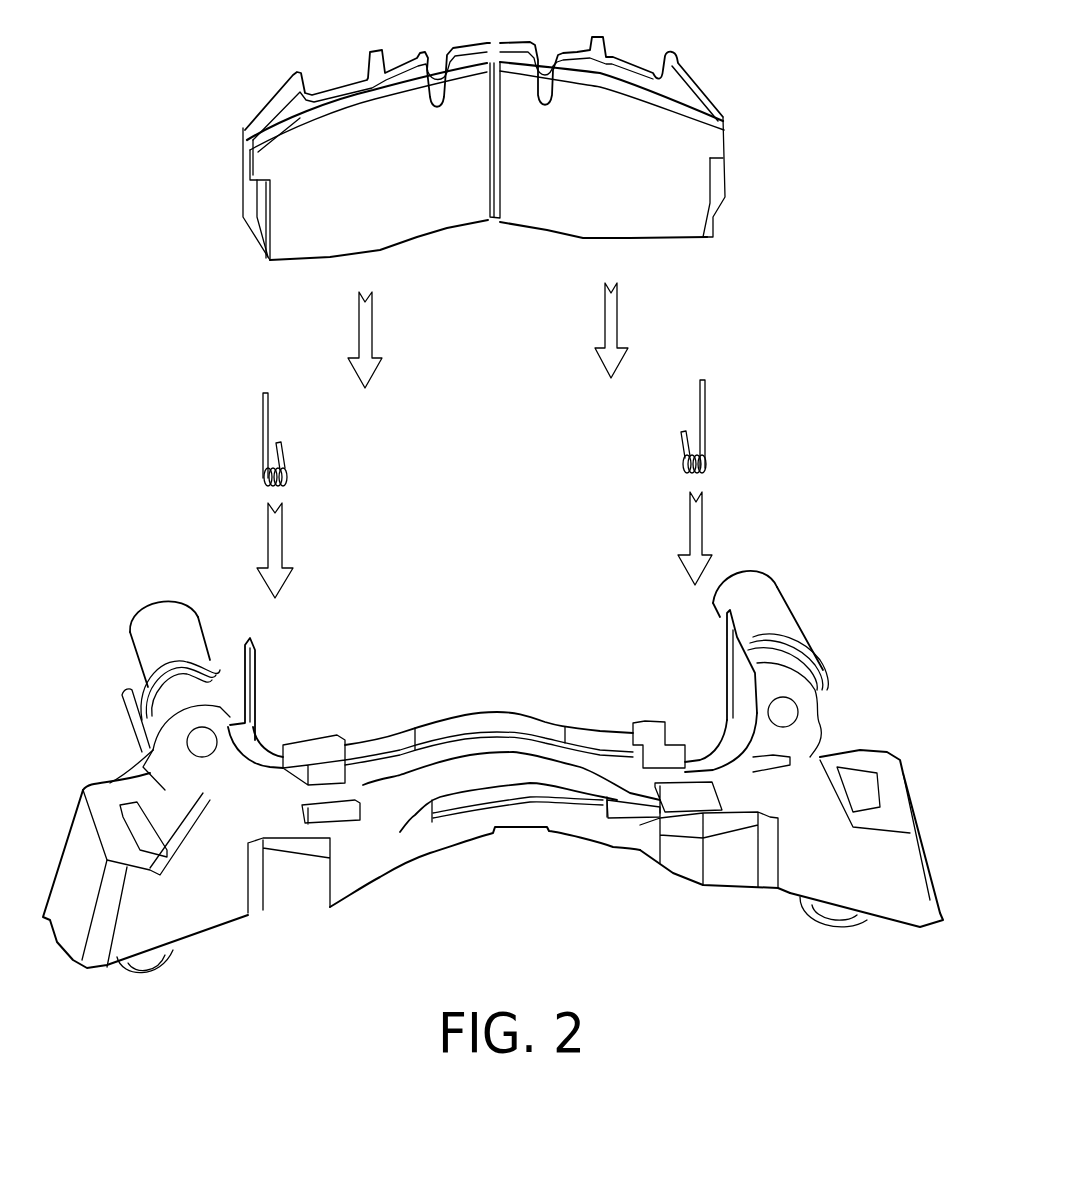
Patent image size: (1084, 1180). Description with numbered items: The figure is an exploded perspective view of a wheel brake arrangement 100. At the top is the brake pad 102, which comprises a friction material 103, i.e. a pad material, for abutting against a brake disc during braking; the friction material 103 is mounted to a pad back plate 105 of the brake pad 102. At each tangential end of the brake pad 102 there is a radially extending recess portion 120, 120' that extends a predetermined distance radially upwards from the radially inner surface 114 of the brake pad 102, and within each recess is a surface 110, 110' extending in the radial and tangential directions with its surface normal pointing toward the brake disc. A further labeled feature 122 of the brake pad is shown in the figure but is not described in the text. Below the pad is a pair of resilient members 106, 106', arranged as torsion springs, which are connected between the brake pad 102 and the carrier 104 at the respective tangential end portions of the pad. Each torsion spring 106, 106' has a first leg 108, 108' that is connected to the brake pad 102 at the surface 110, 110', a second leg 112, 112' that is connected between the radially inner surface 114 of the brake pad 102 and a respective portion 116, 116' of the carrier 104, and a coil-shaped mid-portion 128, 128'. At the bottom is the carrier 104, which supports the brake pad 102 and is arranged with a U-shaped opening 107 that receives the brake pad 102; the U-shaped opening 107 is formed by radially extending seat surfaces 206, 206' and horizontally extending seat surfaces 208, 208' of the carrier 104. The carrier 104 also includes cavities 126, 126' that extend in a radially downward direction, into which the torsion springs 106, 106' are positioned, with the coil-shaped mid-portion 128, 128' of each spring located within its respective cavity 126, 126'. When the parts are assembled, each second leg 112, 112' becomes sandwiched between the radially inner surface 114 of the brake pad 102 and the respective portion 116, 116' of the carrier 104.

The wheel brake arrangement 100 is at (850, 307).
The brake pad 102 is at (737, 128).
The friction material 103 is at (355, 130).
The pad back plate 105 is at (290, 107).
The backing plate side face 122 is at (287, 163).
The radially extending recess portion 120 is at (207, 205).
The surface 110 is at (206, 219).
The radially inner surface 114 is at (283, 260).
The radially extending recess portion 120' is at (768, 177).
The surface 110' is at (766, 197).
The resilient member 106 is at (208, 440).
The first leg 108 is at (219, 425).
The second leg 112 is at (326, 448).
The coil-shaped mid-portion 128 is at (228, 466).
The resilient member 106' is at (762, 427).
The first leg 108' is at (752, 413).
The second leg 112' is at (637, 438).
The coil-shaped mid-portion 128' is at (745, 452).
The carrier 104 is at (827, 853).
The U-shaped opening 107 is at (367, 757).
The radially extending seat surface 206 is at (293, 675).
The portion of the carrier 116 is at (241, 714).
The cavity 126 is at (335, 744).
The horizontally extending seat surface 208 is at (342, 738).
The radially extending seat surface 206' is at (687, 659).
The portion of the carrier 116' is at (712, 696).
The cavity 126' is at (656, 730).
The horizontally extending seat surface 208' is at (629, 720).